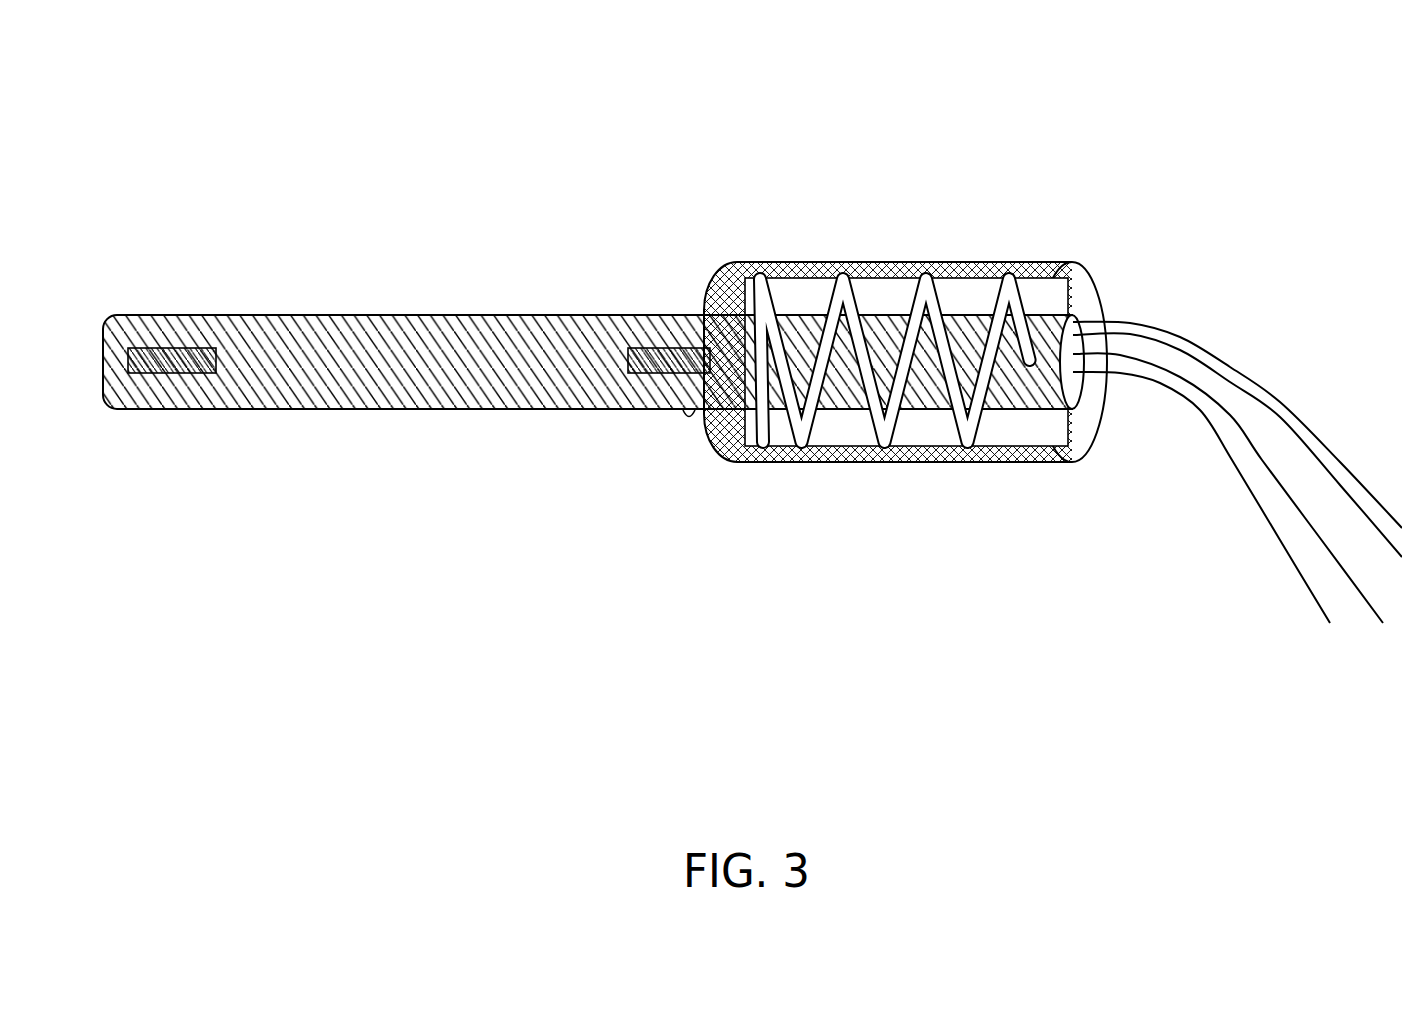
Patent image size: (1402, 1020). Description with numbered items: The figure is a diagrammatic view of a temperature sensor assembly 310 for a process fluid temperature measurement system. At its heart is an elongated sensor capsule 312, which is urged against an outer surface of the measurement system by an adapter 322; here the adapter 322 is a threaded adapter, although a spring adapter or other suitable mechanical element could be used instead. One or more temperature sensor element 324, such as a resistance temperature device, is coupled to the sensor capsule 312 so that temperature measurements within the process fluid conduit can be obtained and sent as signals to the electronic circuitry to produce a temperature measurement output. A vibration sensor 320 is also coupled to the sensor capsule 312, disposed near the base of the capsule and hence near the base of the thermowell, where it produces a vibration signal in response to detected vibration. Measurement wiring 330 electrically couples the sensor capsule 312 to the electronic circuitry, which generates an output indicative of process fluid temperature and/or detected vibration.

The temperature sensor assembly 310 is at (752, 329).
The sensor capsule 312 is at (379, 315).
The vibration sensor 320 is at (652, 373).
The adapter 322 is at (1013, 458).
The temperature sensor element 324 is at (183, 373).
The measurement wiring 330 is at (1187, 338).